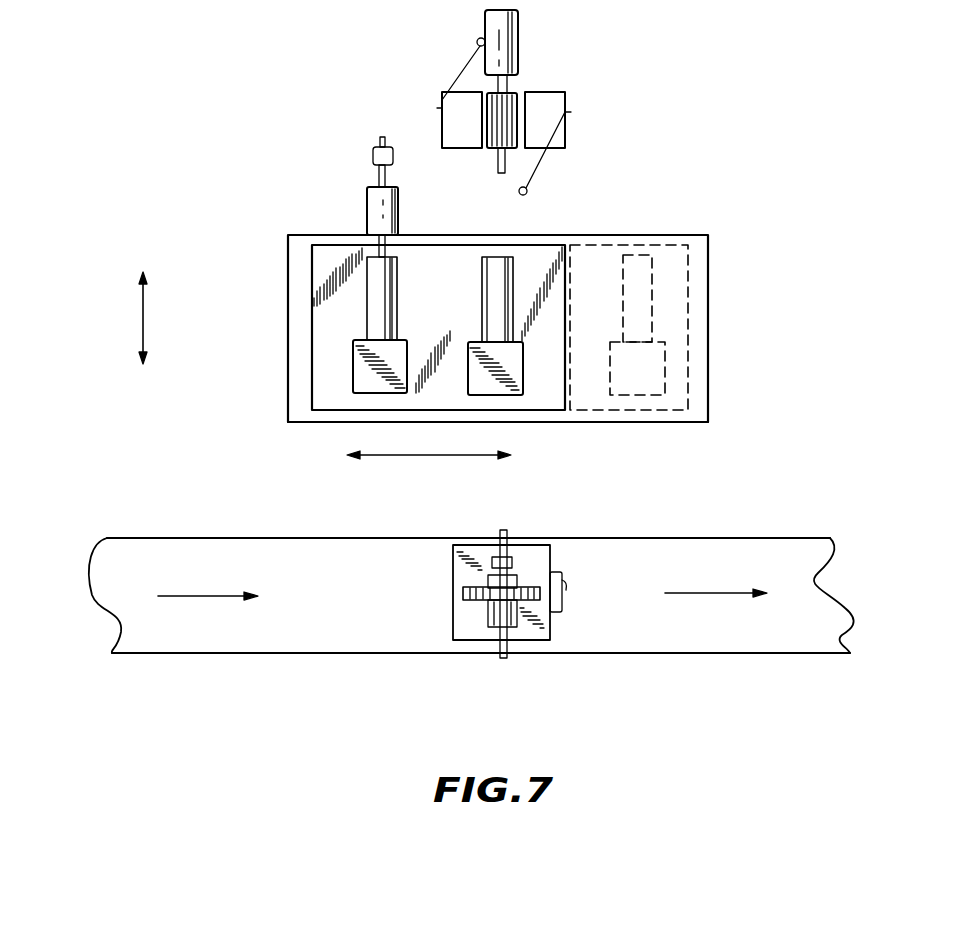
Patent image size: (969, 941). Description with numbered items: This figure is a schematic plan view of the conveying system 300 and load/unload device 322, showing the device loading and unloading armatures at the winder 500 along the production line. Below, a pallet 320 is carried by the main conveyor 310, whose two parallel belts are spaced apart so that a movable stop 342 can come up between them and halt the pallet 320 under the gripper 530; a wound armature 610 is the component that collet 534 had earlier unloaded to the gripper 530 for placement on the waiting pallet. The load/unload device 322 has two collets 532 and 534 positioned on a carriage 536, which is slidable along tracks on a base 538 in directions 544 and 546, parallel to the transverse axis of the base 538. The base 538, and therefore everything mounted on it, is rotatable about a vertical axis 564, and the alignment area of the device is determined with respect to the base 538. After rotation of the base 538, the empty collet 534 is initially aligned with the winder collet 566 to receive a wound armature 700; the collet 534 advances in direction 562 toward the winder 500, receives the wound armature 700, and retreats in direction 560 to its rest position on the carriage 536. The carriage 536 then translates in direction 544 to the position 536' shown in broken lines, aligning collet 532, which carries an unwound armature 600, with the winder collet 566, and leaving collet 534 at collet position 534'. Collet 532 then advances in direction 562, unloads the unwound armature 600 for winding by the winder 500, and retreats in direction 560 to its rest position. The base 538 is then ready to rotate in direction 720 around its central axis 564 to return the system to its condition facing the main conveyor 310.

The conveying system 300 is at (205, 130).
The main conveyor 310 is at (125, 597).
The pallet 320 is at (532, 633).
The load/unload device 322 is at (740, 307).
The movable stop 342 is at (563, 607).
The winder 500 is at (590, 80).
The gripper 530 is at (455, 648).
The collet 532 is at (400, 358).
The collet 534 is at (438, 399).
The collet position 534' is at (630, 358).
The carriage 536 is at (383, 327).
The carriage position 536' is at (677, 327).
The base 538 is at (708, 410).
The direction 544 is at (506, 456).
The direction 546 is at (355, 456).
The direction 560 is at (143, 358).
The direction 562 is at (143, 278).
The vertical axis 564 is at (500, 315).
The winder collet 566 is at (503, 55).
The unwound armature 600 is at (367, 208).
The wound armature 610 is at (553, 573).
The wound armature 700 is at (492, 150).
The direction 720 is at (868, 349).